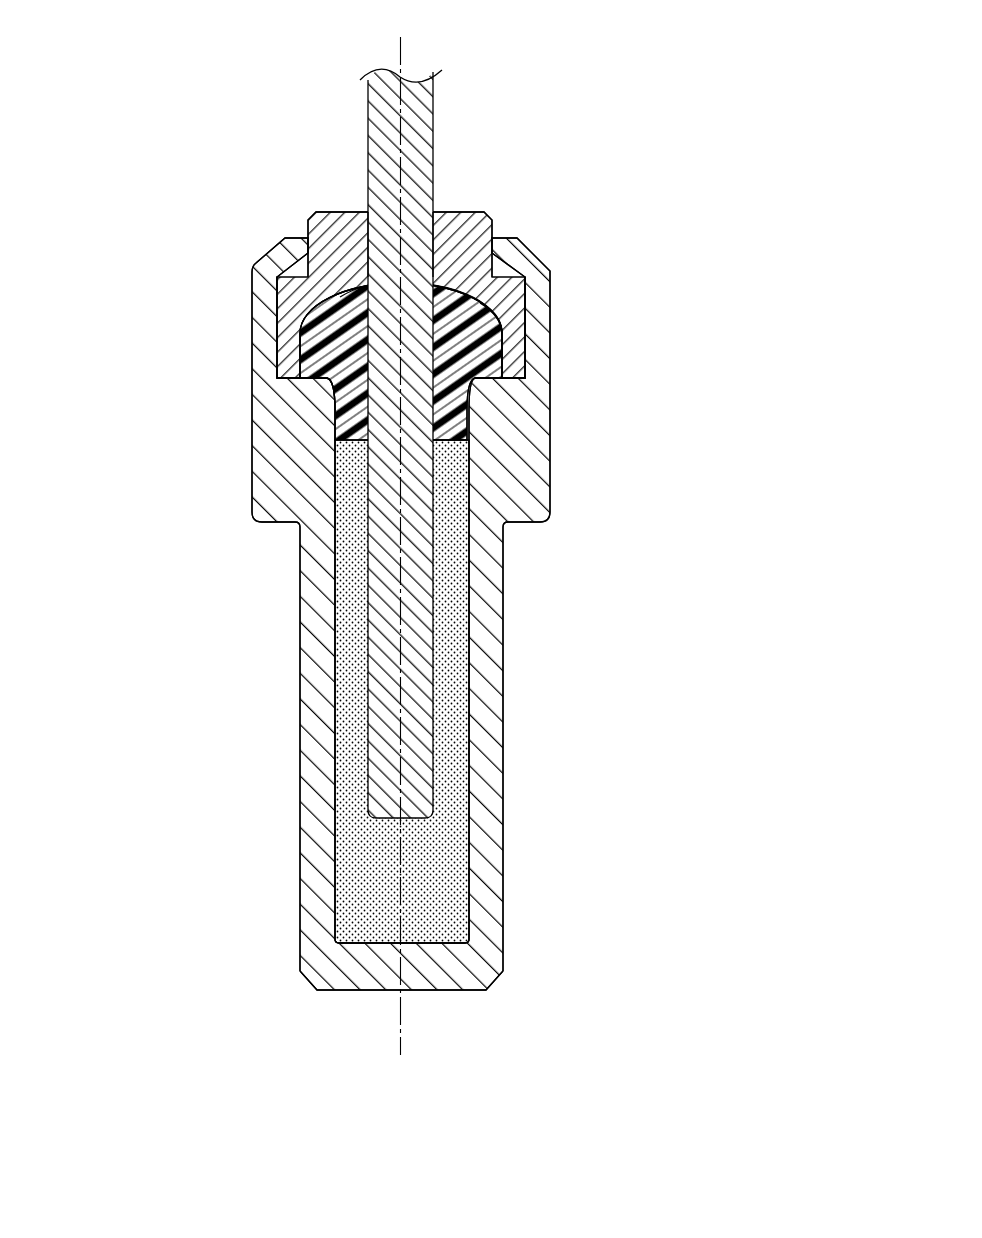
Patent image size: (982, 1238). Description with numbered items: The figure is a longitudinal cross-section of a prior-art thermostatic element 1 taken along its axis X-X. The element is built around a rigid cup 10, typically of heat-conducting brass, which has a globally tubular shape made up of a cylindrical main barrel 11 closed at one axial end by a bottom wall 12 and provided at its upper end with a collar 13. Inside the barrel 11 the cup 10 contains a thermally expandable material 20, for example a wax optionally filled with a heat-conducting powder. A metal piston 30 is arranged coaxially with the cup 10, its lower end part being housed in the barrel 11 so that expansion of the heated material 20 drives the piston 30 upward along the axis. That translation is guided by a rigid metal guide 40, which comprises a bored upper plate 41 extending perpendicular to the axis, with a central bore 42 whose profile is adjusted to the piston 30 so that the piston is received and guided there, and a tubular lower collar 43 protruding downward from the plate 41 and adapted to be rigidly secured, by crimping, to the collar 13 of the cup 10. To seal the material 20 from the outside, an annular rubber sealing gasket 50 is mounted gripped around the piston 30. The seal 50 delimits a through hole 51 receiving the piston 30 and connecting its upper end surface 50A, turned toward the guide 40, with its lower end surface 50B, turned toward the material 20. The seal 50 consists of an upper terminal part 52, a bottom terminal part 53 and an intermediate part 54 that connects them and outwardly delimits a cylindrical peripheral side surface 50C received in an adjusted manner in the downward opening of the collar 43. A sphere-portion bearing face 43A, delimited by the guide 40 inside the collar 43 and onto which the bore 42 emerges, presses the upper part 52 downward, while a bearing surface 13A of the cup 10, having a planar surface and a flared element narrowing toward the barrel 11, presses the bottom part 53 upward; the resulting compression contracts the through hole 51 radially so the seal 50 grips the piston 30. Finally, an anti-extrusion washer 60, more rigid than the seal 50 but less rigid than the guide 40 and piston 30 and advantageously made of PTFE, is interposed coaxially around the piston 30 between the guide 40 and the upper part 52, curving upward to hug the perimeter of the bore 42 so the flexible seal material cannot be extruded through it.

The thermostatic element 1 is at (248, 243).
The rigid cup 10 is at (141, 642).
The main barrel 11 is at (323, 700).
The bottom wall 12 is at (338, 970).
The collar of the cup 13 is at (270, 477).
The bearing surface 13A is at (526, 364).
The thermally expandable material 20 is at (382, 923).
The piston 30 is at (415, 710).
The guide 40 is at (723, 237).
The bored upper plate 41 is at (483, 228).
The central bore 42 is at (422, 231).
The lower collar 43 is at (515, 325).
The bearing face 43A is at (305, 344).
The sealing gasket 50 is at (733, 372).
The upper end surface 50A is at (535, 288).
The lower end surface 50B is at (320, 384).
The peripheral side surface 50C is at (318, 370).
The through hole 51 is at (300, 365).
The upper terminal part 52 is at (500, 320).
The bottom terminal part 53 is at (470, 438).
The intermediate part 54 is at (470, 398).
The anti-extrusion washer 60 is at (358, 292).